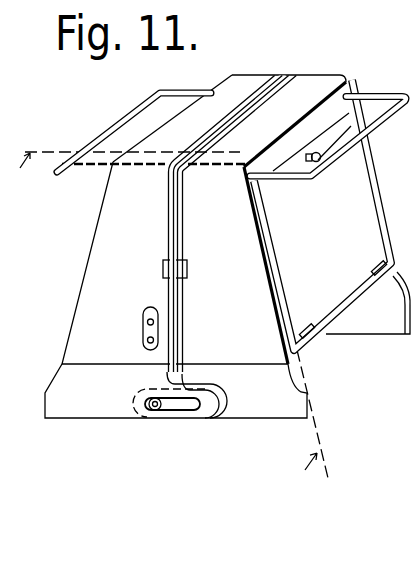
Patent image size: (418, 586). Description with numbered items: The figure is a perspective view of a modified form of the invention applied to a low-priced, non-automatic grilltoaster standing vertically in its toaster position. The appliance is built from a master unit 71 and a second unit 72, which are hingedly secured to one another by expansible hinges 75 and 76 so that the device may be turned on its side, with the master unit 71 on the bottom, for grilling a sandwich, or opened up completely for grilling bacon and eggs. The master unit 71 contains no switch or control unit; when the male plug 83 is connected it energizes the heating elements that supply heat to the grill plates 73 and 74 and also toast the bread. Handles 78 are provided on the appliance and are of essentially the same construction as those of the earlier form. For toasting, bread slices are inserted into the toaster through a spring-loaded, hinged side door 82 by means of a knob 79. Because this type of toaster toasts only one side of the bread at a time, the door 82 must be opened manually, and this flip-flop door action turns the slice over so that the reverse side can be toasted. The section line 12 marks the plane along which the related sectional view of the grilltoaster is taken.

The section line 12 is at (170, 321).
The master unit 71 is at (110, 273).
The unit 72 is at (311, 84).
The grill plate 73 is at (168, 233).
The grill plate 74 is at (177, 213).
The expansible hinge 75 is at (105, 410).
The expansible hinge 76 is at (368, 327).
The handle 78 is at (116, 119).
The knob 79 is at (313, 152).
The hinged side door 82 is at (363, 199).
The male plug 83 is at (143, 321).